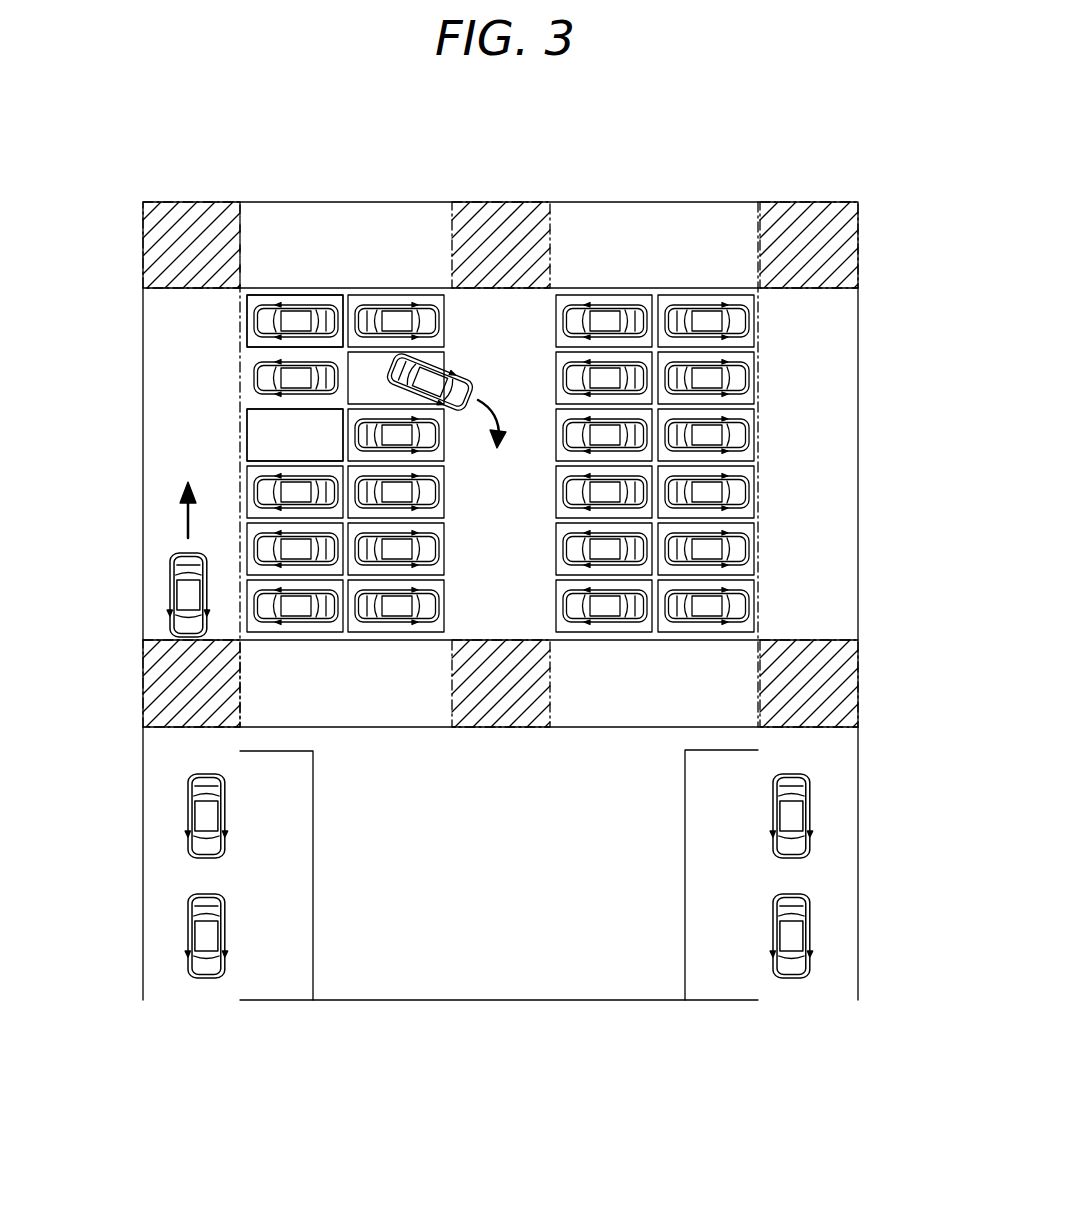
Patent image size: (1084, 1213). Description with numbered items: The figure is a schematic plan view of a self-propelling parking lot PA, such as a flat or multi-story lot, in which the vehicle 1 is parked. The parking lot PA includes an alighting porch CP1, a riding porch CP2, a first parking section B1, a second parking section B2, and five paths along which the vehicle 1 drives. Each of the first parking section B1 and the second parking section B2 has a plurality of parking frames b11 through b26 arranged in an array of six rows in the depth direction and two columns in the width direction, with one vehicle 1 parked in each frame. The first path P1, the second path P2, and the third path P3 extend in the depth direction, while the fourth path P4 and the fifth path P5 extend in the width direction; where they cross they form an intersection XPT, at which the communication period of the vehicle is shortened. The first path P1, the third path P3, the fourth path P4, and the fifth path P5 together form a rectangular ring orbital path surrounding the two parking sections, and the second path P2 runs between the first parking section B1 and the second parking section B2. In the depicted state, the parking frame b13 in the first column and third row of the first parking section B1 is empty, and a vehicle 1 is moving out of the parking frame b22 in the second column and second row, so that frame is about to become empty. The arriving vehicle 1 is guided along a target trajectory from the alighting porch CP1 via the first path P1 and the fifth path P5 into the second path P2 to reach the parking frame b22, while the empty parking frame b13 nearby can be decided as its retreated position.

The parking lot PA is at (793, 196).
The intersection XPT is at (165, 248).
The first path P1 is at (182, 400).
The second path P2 is at (490, 595).
The third path P3 is at (820, 424).
The fourth path P4 is at (612, 705).
The fifth path P5 is at (651, 232).
The first parking section B1 is at (257, 426).
The second parking section B2 is at (729, 284).
The parking frame b11 is at (331, 297).
The parking frame b13 is at (248, 440).
The parking frame b22 is at (383, 358).
The parking frame b26 is at (370, 632).
The vehicle 1 is at (312, 305).
The alighting porch CP1 is at (269, 975).
The riding porch CP2 is at (722, 975).